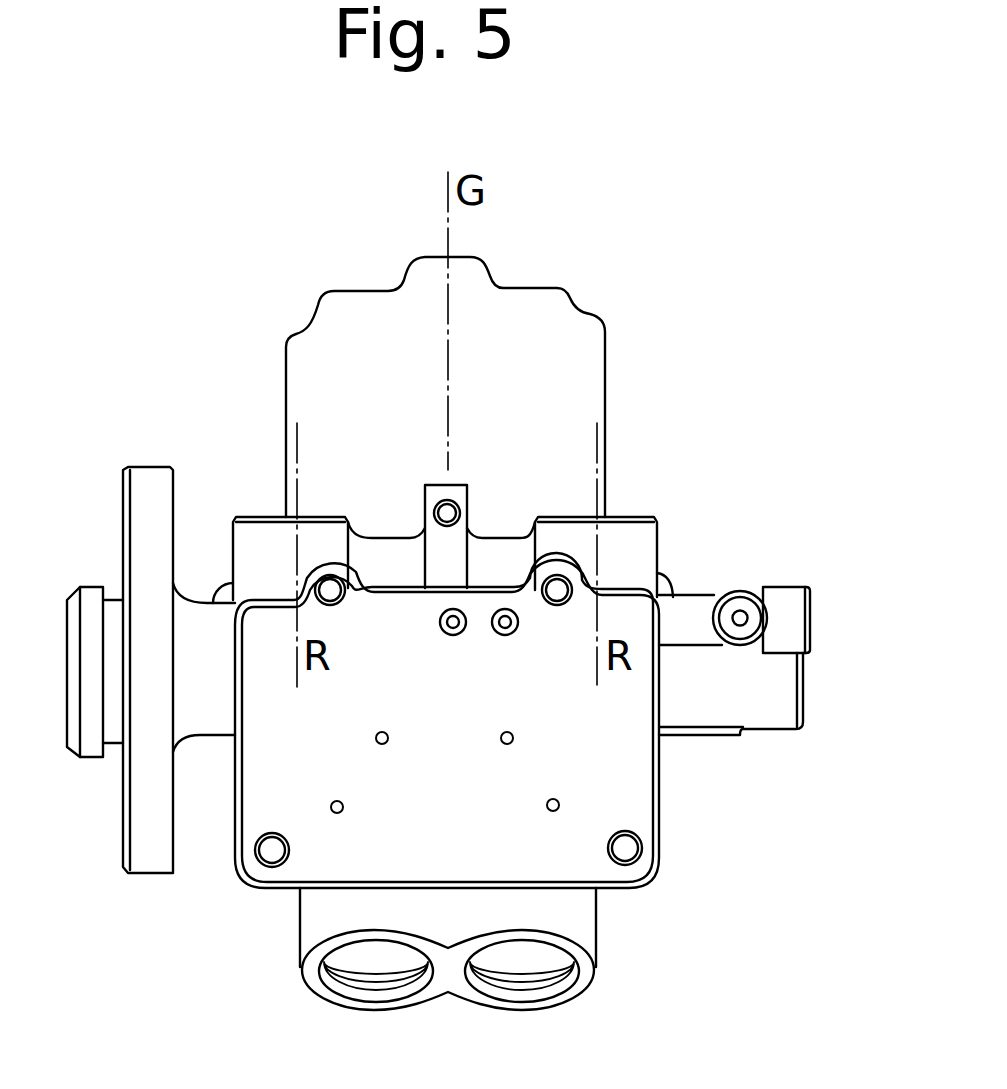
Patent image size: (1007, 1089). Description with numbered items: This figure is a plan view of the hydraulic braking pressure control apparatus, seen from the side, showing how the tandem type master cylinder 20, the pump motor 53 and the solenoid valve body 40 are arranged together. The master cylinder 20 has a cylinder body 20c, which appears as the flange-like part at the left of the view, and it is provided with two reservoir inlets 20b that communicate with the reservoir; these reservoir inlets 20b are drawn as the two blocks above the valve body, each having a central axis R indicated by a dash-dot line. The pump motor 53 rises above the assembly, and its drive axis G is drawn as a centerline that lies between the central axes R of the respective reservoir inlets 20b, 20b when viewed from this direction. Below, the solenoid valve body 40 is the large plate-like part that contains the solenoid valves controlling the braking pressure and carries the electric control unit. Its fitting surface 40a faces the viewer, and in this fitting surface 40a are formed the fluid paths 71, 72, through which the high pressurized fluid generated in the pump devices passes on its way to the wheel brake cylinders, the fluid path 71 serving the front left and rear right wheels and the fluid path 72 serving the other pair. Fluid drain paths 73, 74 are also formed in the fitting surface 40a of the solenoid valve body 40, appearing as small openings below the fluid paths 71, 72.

The master cylinder 20 is at (768, 690).
The reservoir inlets 20b is at (273, 538).
The cylinder body 20c is at (152, 475).
The pump motor 53 is at (560, 353).
The solenoid valve body 40 is at (233, 882).
The fitting surface 40a is at (546, 843).
The fluid path 71 is at (514, 738).
The fluid path 72 is at (375, 739).
The fluid drain path 73 is at (560, 805).
The fluid drain path 74 is at (330, 807).